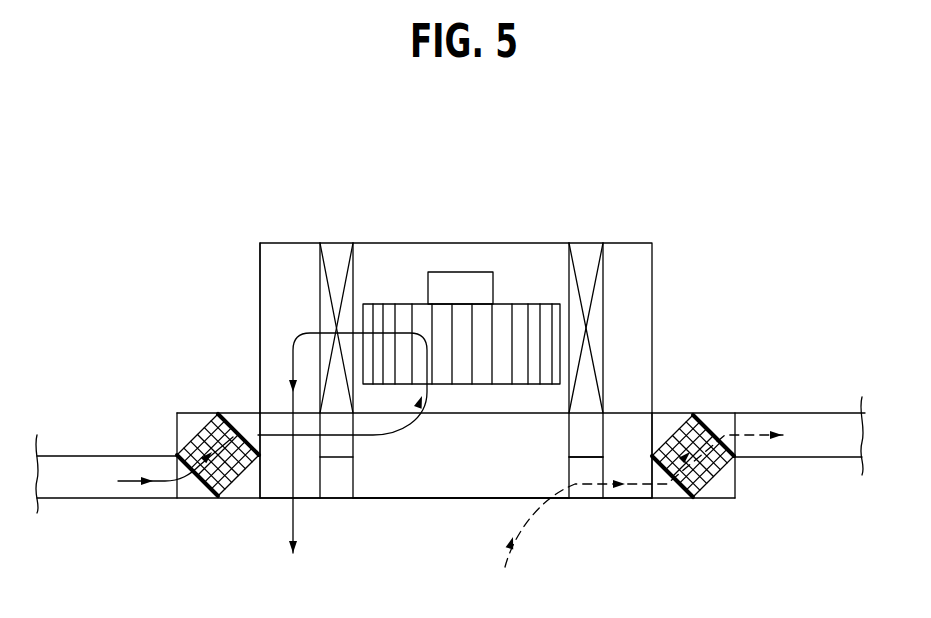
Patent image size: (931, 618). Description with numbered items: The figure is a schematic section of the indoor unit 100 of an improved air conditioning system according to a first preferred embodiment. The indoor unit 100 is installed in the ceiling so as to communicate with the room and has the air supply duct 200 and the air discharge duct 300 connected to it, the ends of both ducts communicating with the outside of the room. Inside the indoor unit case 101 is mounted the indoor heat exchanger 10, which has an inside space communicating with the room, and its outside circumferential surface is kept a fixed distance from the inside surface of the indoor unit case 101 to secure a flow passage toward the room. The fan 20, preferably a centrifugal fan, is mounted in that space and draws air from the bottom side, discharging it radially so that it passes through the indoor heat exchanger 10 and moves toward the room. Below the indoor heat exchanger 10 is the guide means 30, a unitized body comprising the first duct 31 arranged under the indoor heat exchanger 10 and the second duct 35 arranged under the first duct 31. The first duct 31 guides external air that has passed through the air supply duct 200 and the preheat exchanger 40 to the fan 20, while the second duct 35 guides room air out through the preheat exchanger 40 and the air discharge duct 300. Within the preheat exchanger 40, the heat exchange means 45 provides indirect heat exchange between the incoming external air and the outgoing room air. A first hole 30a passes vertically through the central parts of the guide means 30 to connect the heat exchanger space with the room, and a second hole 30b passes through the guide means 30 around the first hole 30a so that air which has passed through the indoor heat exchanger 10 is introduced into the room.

The indoor unit 100 is at (477, 243).
The indoor unit case 101 is at (258, 283).
The indoor heat exchanger 10 is at (598, 298).
The fan 20 is at (532, 347).
The first duct 31 is at (593, 433).
The air supply duct 200 is at (98, 467).
The heat exchange means 45 is at (227, 497).
The second hole 30b is at (305, 488).
The first hole 30a is at (455, 488).
The guide means 30 is at (624, 508).
The second duct 35 is at (585, 493).
The preheat exchanger 40 is at (722, 508).
The air discharge duct 300 is at (820, 423).